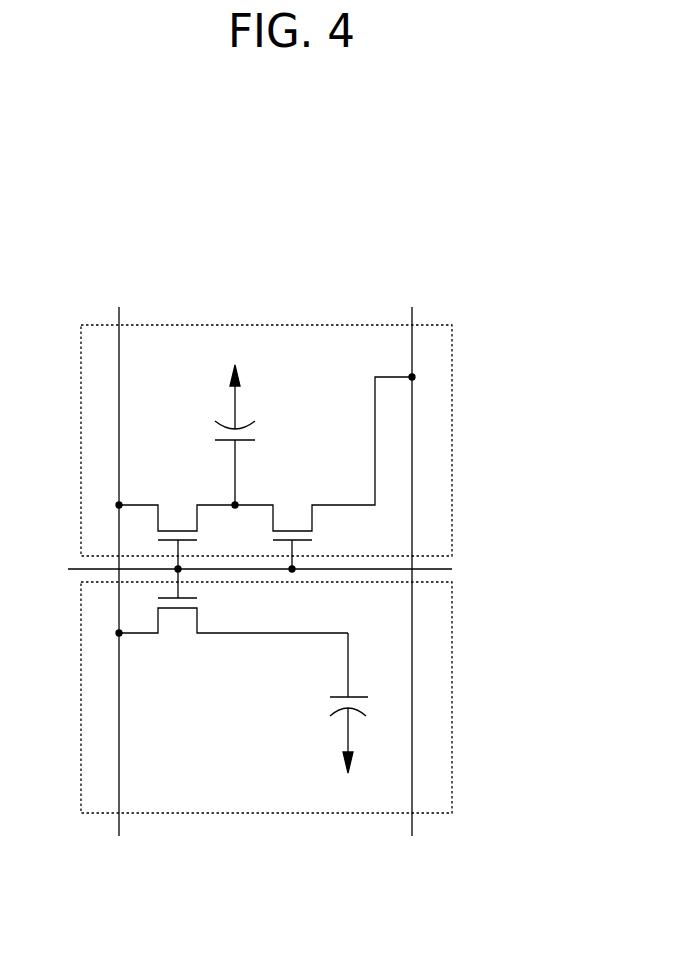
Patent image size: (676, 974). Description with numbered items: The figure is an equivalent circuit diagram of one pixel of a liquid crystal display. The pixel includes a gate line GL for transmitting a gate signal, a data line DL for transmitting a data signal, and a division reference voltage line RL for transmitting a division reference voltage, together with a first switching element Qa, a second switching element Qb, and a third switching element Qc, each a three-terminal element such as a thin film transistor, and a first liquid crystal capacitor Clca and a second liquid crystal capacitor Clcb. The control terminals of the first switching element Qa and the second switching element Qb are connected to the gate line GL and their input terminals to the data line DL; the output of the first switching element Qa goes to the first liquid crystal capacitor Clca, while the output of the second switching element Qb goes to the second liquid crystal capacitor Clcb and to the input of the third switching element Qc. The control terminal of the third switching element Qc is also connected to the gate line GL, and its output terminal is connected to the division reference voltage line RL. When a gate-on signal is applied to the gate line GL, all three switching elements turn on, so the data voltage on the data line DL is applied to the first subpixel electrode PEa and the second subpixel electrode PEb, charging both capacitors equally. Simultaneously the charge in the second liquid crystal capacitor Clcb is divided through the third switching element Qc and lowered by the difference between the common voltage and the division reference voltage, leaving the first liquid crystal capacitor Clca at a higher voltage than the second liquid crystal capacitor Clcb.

The data line DL is at (121, 558).
The division reference voltage line RL is at (412, 558).
The gate line GL is at (244, 571).
The first switching element Qa is at (232, 614).
The second switching element Qb is at (177, 526).
The third switching element Qc is at (292, 526).
The first liquid crystal capacitor Clca is at (323, 703).
The second liquid crystal capacitor Clcb is at (257, 435).
The first subpixel electrode PEa is at (451, 695).
The second subpixel electrode PEb is at (452, 440).